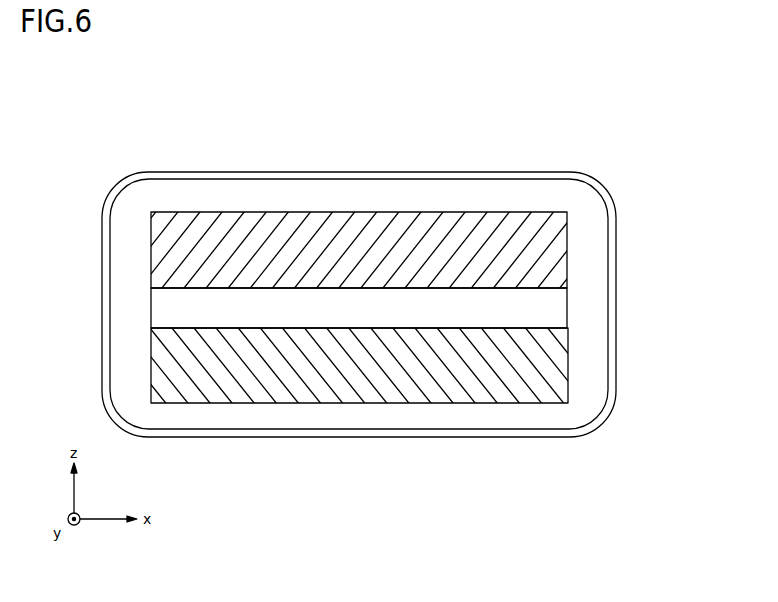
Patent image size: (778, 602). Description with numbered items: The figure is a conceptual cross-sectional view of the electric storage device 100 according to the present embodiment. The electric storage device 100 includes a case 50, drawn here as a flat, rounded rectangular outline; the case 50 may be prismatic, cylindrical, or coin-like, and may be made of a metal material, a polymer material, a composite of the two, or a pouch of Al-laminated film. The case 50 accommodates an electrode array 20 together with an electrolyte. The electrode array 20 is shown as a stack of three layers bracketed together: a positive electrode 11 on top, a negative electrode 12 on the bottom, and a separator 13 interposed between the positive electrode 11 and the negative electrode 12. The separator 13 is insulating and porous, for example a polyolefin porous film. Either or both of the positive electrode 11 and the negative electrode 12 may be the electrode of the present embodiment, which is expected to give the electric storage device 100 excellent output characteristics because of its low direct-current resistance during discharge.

The electric storage device 100 is at (152, 112).
The case 50 is at (367, 171).
The electrode array 20 is at (406, 307).
The positive electrode 11 is at (560, 252).
The separator 13 is at (560, 308).
The negative electrode 12 is at (392, 365).